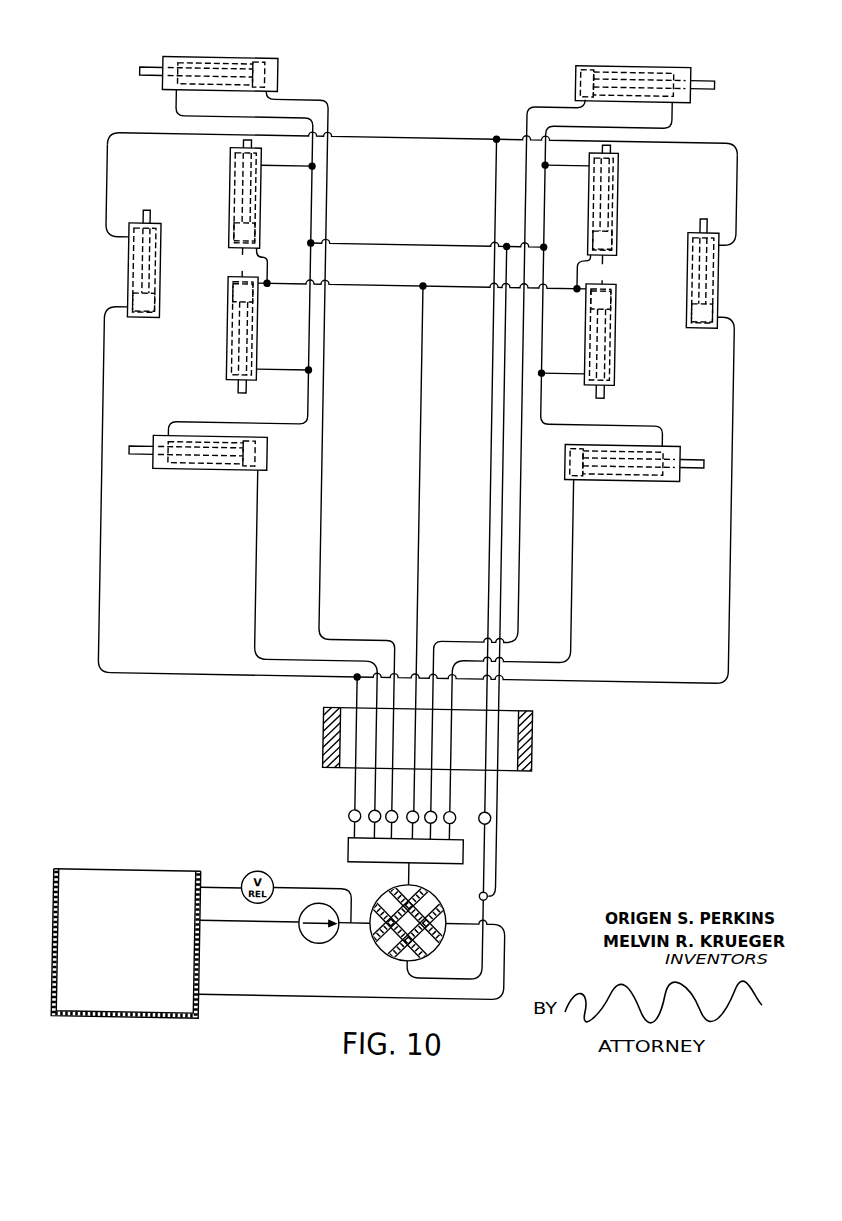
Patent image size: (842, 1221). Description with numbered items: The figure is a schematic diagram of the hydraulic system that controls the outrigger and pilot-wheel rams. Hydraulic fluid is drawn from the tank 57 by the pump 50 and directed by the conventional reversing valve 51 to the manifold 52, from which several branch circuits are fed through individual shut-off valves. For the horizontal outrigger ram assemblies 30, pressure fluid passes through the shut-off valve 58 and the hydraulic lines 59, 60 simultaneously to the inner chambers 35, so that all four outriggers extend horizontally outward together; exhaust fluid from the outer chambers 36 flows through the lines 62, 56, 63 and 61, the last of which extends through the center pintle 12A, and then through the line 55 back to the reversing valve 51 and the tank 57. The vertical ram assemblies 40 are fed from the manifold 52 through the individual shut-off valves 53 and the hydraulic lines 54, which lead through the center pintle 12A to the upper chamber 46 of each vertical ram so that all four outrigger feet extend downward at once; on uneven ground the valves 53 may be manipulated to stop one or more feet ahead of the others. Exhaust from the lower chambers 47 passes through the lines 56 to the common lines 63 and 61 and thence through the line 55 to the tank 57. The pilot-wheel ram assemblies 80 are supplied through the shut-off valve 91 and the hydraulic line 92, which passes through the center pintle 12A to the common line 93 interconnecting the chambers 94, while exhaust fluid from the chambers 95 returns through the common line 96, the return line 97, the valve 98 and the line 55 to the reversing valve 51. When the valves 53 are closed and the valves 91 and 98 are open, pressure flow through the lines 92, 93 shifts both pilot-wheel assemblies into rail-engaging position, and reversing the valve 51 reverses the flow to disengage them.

The center pintle 12A is at (519, 770).
The hydraulic ram assembly 30 is at (420, 269).
The inner chamber 35 is at (422, 266).
The outer chamber 36 is at (236, 196).
The vertical ram assembly 40 is at (422, 275).
The upper chamber 46 is at (264, 61).
The lower chamber 47 is at (189, 61).
The pump 50 is at (330, 946).
The reversing valve 51 is at (445, 898).
The manifold 52 is at (356, 850).
The individual shut-off valve 53 is at (398, 813).
The hydraulic line 54 is at (322, 624).
The line 55 is at (457, 977).
The hydraulic line 56 is at (168, 109).
The tank 57 is at (115, 876).
The individual shut-off valve 58 is at (424, 813).
The hydraulic line 59 is at (420, 568).
The hydraulic line 60 is at (380, 288).
The line 61 is at (490, 420).
The line 62 is at (287, 169).
The line 63 is at (454, 244).
The wheel ram assembly 80 is at (417, 291).
The individual shut-off valve 91 is at (356, 815).
The hydraulic line 92 is at (360, 690).
The common line 93 is at (103, 672).
The chamber 94 is at (158, 312).
The chamber 95 is at (158, 246).
The common line 96 is at (100, 176).
The return line 97 is at (492, 182).
The valve 98 is at (498, 816).